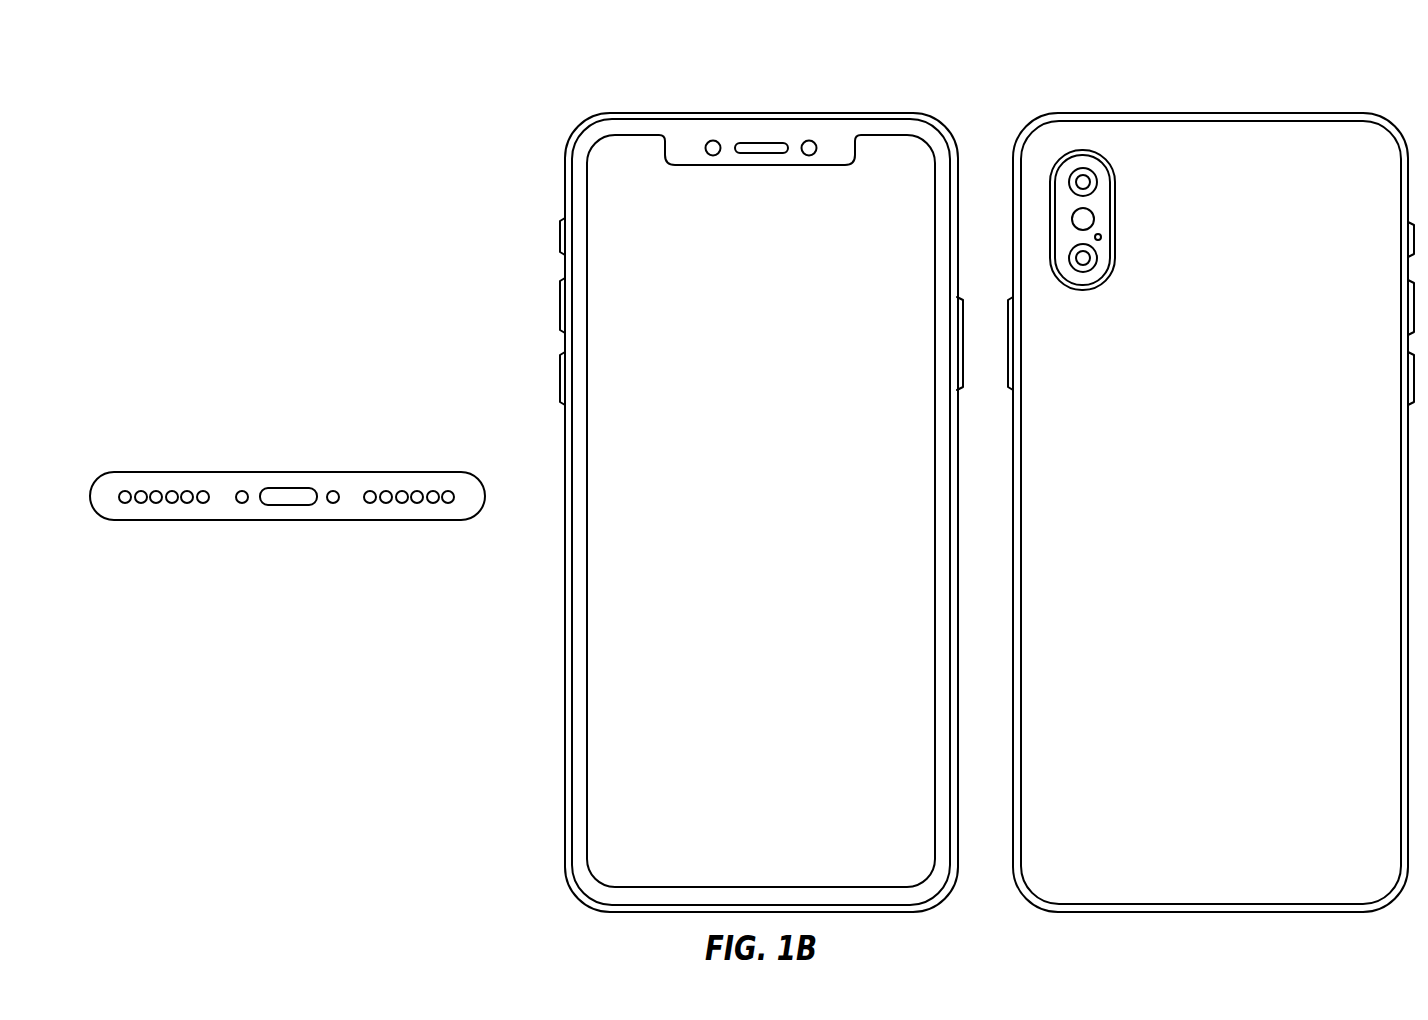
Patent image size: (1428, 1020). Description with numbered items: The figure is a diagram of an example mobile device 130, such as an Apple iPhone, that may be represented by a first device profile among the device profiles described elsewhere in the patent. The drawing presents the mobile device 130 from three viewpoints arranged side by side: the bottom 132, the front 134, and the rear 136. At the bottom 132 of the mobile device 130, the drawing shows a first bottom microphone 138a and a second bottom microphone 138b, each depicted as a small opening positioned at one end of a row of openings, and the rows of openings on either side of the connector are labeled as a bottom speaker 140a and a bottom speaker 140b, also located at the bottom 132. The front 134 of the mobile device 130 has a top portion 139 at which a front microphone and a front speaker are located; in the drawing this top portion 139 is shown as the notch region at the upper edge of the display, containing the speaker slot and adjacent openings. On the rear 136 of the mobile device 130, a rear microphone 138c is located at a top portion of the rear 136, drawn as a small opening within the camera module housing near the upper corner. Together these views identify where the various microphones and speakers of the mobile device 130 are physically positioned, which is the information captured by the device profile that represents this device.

The mobile device 130 is at (199, 80).
The bottom 132 is at (419, 402).
The front 134 is at (892, 81).
The rear 136 is at (1342, 81).
The first bottom microphone 138a is at (372, 490).
The second bottom microphone 138b is at (200, 490).
The rear microphone 138c is at (1101, 233).
The top portion 139 is at (741, 129).
The bottom speaker 140a is at (453, 523).
The bottom speaker 140b is at (192, 523).